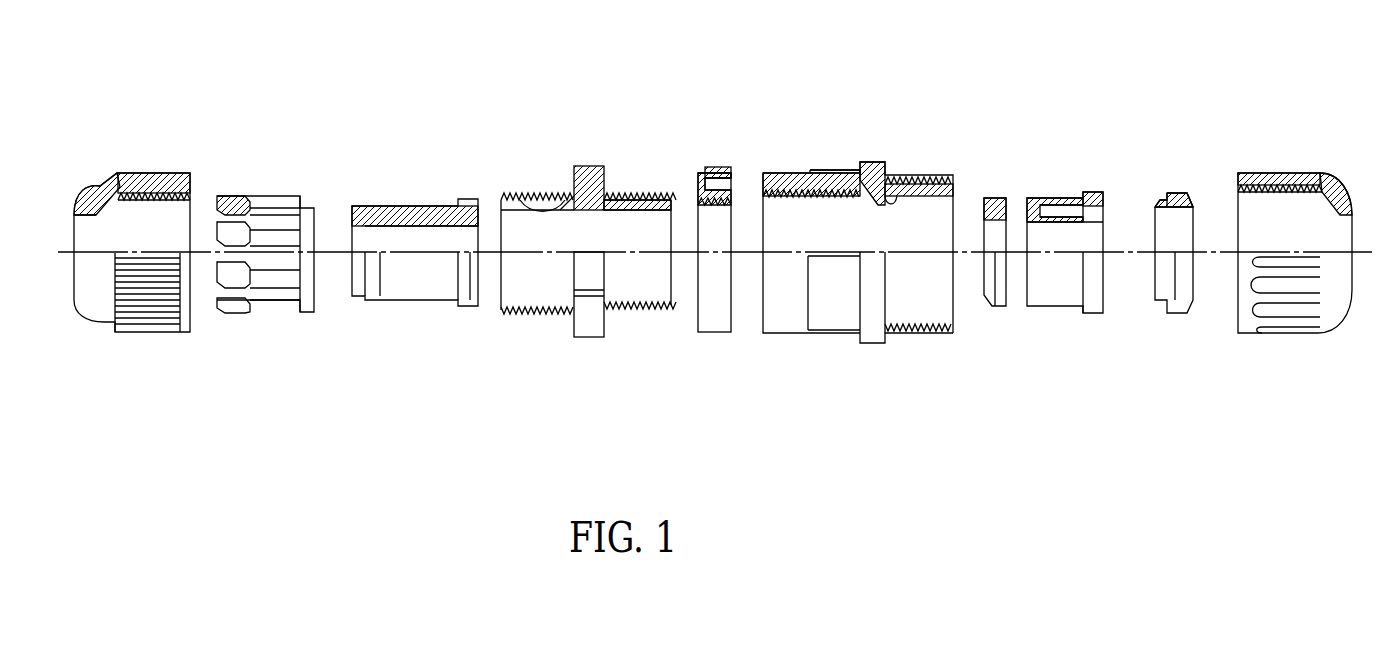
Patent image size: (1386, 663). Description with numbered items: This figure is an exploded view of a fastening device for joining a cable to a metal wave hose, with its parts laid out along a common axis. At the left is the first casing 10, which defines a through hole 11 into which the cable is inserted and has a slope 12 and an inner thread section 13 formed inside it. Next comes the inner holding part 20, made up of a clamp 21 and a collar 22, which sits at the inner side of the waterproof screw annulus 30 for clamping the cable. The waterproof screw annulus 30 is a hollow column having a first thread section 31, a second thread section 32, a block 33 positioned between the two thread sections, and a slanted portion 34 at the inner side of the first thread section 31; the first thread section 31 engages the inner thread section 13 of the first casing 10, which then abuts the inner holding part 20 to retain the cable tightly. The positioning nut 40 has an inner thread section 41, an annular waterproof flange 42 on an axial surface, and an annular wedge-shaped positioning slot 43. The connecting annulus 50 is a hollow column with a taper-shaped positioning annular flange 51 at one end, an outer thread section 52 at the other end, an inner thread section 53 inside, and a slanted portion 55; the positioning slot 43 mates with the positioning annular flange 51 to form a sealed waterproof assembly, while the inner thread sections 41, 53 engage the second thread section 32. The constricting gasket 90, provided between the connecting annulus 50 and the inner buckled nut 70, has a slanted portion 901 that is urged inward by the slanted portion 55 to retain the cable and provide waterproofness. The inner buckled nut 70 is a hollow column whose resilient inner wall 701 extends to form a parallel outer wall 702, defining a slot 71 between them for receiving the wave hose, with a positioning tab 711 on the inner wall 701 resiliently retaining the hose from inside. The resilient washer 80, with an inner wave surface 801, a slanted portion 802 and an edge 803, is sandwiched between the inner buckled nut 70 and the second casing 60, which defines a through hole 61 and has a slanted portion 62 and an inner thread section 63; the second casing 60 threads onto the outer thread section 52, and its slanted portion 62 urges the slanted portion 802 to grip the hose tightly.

The first casing 10 is at (107, 266).
The through hole 11 is at (88, 232).
The slope 12 is at (96, 196).
The inner thread section 13 is at (148, 190).
The inner holding part 20 is at (347, 235).
The clamp 21 is at (270, 195).
The collar 22 is at (405, 204).
The waterproof screw annulus 30 is at (586, 264).
The first thread section 31 is at (556, 197).
The second thread section 32 is at (627, 194).
The block 33 is at (580, 172).
The slanted portion 34 is at (516, 192).
The positioning nut 40 is at (719, 254).
The inner thread section 41 is at (695, 207).
The waterproof flange 42 is at (718, 171).
The positioning slot 43 is at (732, 182).
The connecting annulus 50 is at (858, 257).
The positioning annular flange 51 is at (773, 180).
The outer thread section 52 is at (912, 183).
The inner thread section 53 is at (822, 194).
The slanted portion 55 is at (897, 194).
The second casing 60 is at (1312, 258).
The through hole 61 is at (1346, 216).
The slanted portion 62 is at (1327, 186).
The inner thread section 63 is at (1290, 177).
The inner buckled nut 70 is at (1061, 237).
The slot 71 is at (1096, 212).
The inner wall 701 is at (1034, 212).
The outer wall 702 is at (1046, 204).
The positioning tab 711 is at (1079, 214).
The resilient washer 80 is at (1191, 249).
The inner wave surface 801 is at (1178, 197).
The slanted portion 802 is at (1165, 204).
The chamfer 803 is at (1192, 193).
The constricting gasket 90 is at (986, 272).
The slanted portion 901 is at (994, 206).